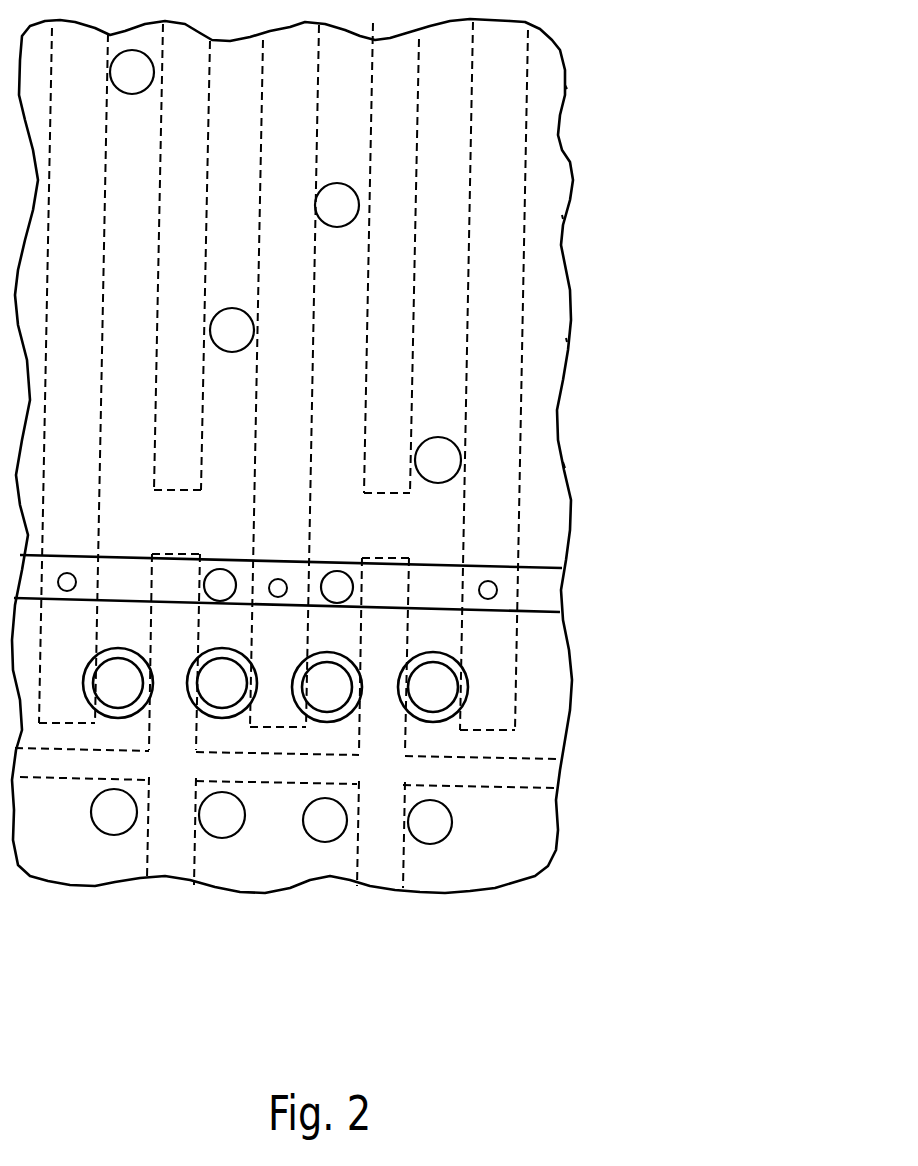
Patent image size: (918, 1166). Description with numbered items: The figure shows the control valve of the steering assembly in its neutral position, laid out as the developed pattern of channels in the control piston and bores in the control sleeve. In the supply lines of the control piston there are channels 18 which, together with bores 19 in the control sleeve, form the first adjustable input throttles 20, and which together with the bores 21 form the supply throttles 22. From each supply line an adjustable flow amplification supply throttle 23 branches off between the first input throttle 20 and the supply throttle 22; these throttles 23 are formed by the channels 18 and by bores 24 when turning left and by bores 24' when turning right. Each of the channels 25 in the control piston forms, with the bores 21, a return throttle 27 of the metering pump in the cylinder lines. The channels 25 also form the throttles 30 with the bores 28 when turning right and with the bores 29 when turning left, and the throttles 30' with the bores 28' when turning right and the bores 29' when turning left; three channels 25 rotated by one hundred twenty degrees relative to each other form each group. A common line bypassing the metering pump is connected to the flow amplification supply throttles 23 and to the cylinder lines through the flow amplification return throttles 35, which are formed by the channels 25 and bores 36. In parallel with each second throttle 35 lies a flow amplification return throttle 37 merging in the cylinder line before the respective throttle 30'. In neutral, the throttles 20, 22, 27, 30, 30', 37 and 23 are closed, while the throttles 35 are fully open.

The channels 18 is at (393, 762).
The bores 19 is at (462, 851).
The first adjustable input throttles 20 is at (600, 828).
The bores 21 is at (275, 685).
The supply throttles 22 is at (285, 753).
The flow amplification supply throttle 23 is at (280, 556).
The bores 24 is at (221, 561).
The bores 24' is at (338, 562).
The channels 25 is at (506, 437).
The return throttle 27 is at (605, 697).
The bores 28 is at (438, 437).
The bores 28' is at (232, 309).
The bores 29 is at (132, 101).
The bores 29' is at (337, 184).
The throttles 30 is at (685, 277).
The throttles 30' is at (686, 279).
The flow amplification return throttles 35 is at (608, 597).
The bores 36 is at (488, 635).
The flow amplification return throttle 37 is at (287, 605).